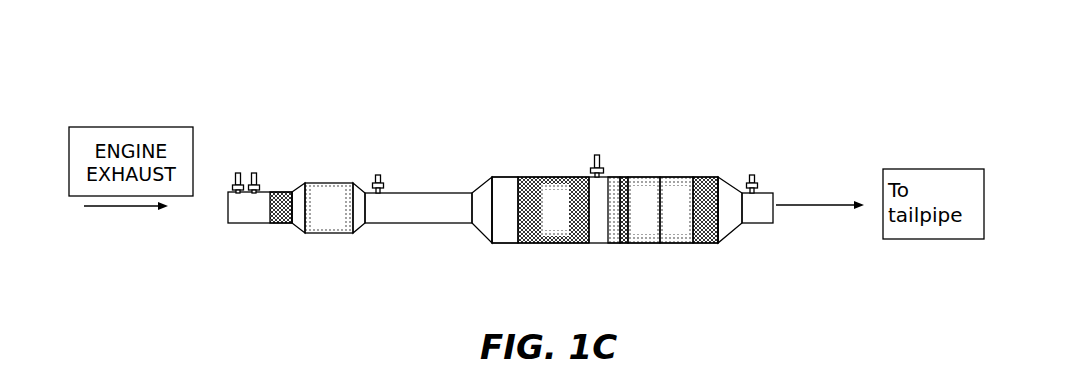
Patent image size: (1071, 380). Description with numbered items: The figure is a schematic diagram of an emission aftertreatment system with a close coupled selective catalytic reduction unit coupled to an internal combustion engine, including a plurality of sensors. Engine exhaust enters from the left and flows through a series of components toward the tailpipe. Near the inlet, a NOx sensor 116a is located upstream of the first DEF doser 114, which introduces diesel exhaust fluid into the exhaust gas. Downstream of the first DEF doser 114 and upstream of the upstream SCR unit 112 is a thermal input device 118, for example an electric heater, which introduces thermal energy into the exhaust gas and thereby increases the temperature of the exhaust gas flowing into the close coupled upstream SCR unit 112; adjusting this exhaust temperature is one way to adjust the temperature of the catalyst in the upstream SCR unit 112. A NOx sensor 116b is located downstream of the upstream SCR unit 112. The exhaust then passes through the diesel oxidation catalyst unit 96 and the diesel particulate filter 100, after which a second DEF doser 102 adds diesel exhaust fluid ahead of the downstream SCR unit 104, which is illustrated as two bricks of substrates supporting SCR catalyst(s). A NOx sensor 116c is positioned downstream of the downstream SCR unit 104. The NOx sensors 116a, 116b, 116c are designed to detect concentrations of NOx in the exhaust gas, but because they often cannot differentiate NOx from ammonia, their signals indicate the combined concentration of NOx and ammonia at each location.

The diesel oxidation catalyst unit 96 is at (498, 177).
The diesel particulate filter 100 is at (552, 177).
The second DEF doser 102 is at (596, 108).
The downstream SCR unit 104 is at (693, 247).
The upstream SCR unit 112 is at (323, 183).
The first DEF doser 114 is at (262, 122).
The NOx sensor 116a is at (237, 122).
The NOx sensor 116b is at (381, 122).
The NOx sensor 116c is at (752, 122).
The thermal input device 118 is at (278, 223).